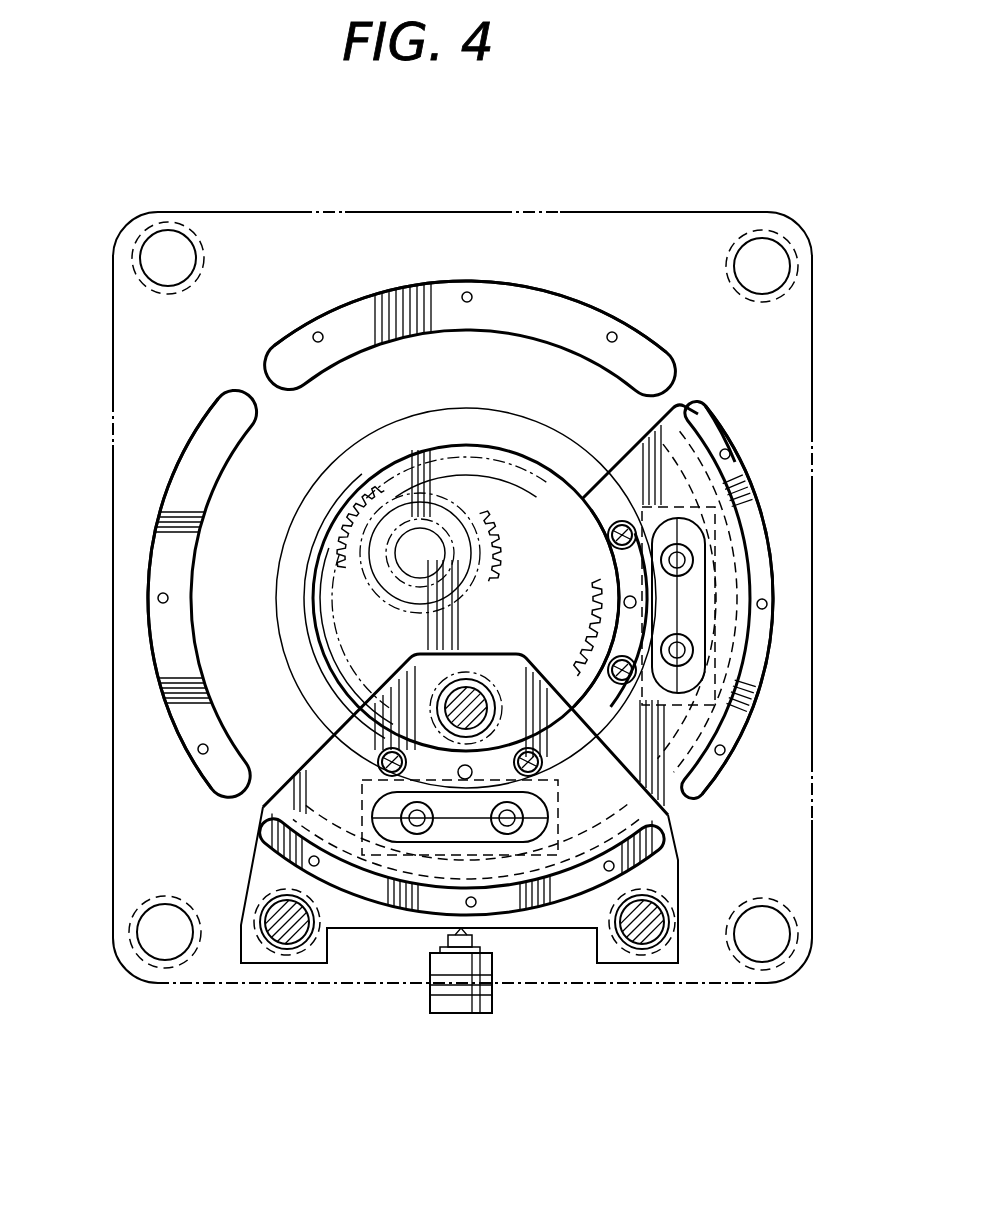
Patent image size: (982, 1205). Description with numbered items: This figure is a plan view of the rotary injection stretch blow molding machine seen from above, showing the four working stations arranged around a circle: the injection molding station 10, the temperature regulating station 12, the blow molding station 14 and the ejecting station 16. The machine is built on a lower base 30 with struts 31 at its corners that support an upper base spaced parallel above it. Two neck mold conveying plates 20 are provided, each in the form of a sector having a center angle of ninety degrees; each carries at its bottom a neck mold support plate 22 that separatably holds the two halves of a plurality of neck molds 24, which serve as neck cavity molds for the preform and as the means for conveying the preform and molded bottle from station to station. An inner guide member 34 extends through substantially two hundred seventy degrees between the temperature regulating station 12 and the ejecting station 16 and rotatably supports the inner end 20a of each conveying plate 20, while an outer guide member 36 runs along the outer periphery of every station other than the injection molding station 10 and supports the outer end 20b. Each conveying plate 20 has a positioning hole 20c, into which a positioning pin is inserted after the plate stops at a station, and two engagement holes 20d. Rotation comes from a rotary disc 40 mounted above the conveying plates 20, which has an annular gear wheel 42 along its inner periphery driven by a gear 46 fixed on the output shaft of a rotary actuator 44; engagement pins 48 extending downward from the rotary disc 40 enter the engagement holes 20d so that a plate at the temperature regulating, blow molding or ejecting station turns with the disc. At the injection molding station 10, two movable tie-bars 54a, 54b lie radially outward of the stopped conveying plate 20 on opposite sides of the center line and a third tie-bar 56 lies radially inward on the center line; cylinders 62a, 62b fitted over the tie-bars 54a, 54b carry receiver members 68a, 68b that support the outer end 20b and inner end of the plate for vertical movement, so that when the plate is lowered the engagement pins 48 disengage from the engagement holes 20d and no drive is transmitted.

The injection molding station 10 is at (690, 857).
The temperature regulating station 12 is at (755, 443).
The blow molding station 14 is at (518, 268).
The ejecting station 16 is at (146, 505).
The neck mold conveying plate 20 is at (263, 807).
The inner end 20a is at (557, 500).
The outer end 20b is at (645, 513).
The positioning hole 20c is at (620, 590).
The engagement hole 20d is at (634, 524).
The neck mold support plate 22 is at (703, 580).
The neck mold 24 is at (687, 560).
The lower base 30 is at (125, 368).
The strut 31 is at (203, 235).
The inner guide member 34 is at (307, 597).
The outer guide member 36 is at (560, 318).
The rotary disc 40 is at (692, 409).
The annular gear wheel 42 is at (593, 624).
The rotary actuator 44 is at (480, 558).
The gear 46 is at (482, 578).
The engagement pin 48 is at (624, 522).
The movable tie-bar 54a is at (288, 935).
The movable tie-bar 54b is at (640, 935).
The tie-bar 56 is at (440, 690).
The cylinder 62a is at (250, 968).
The cylinder 62b is at (657, 970).
The receiver member 68a is at (498, 905).
The receiver member 68b is at (692, 822).